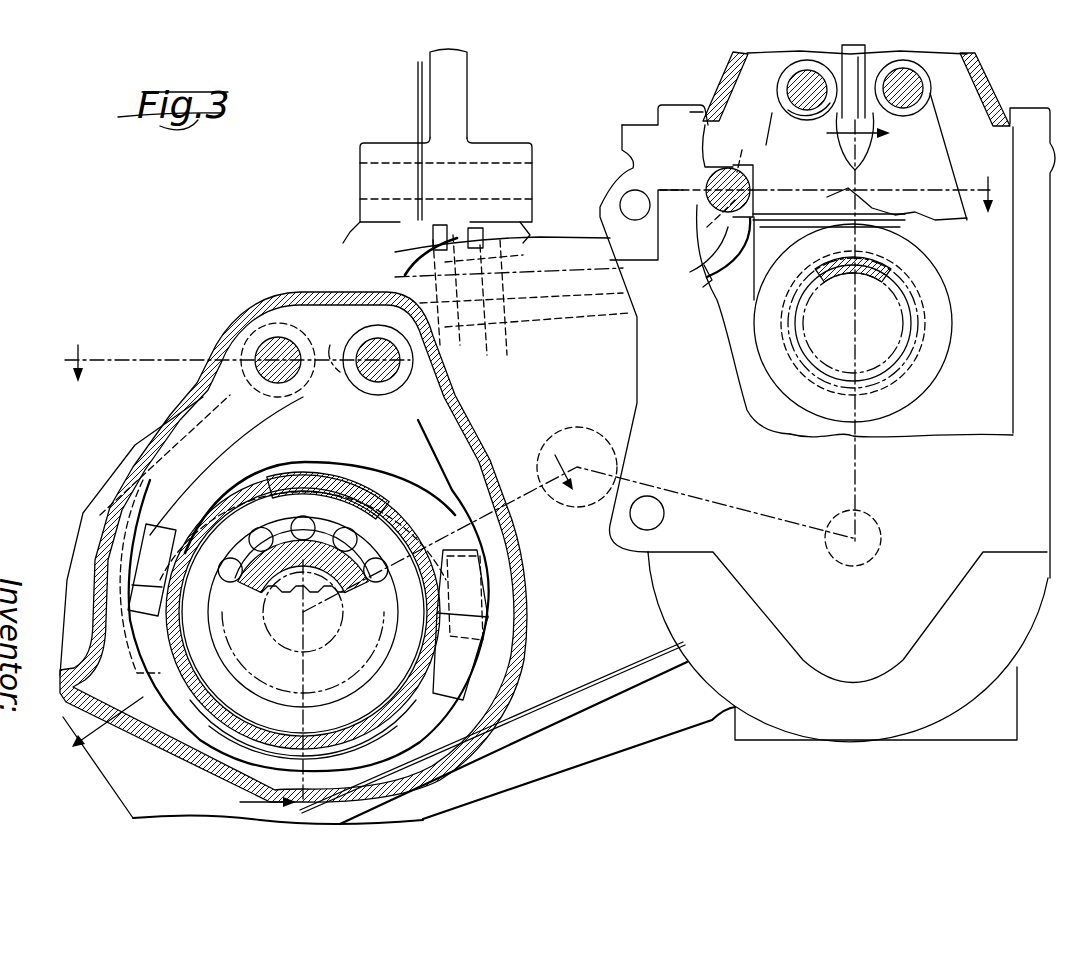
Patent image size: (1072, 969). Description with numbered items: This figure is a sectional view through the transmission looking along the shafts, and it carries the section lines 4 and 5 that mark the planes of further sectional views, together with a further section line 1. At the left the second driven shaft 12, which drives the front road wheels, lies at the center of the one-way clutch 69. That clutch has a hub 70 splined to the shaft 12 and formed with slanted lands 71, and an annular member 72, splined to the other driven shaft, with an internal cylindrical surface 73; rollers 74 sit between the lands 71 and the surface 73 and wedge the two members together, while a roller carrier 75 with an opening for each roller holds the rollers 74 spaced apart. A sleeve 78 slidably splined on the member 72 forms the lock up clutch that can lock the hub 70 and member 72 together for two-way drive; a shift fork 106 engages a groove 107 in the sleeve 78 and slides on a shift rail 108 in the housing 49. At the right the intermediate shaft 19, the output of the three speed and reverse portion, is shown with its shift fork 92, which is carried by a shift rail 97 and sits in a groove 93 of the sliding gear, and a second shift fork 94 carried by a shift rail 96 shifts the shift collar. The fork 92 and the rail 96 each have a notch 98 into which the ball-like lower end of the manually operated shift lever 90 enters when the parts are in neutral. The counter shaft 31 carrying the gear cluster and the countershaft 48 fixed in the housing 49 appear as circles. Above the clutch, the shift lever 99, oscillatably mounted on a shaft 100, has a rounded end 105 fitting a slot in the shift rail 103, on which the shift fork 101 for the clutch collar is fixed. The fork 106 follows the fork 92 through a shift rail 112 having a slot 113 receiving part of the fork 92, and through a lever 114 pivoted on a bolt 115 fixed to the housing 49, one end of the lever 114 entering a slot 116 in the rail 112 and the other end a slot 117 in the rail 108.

The section line 1- 1 is at (555, 468).
The section line 4— 4 is at (450, 591).
The section line 5— 5 is at (530, 279).
The second driven shaft 12 is at (312, 635).
The intermediate shaft 19 is at (832, 362).
The counter shaft 31 is at (876, 527).
The countershaft 48 is at (583, 430).
The transmission housing 49 is at (573, 243).
The one-way clutch 69 is at (272, 514).
The hub 70 is at (362, 568).
The slanted lands 71 is at (335, 570).
The annular member 72 is at (335, 497).
The internal cylindrical surface 73 is at (247, 533).
The rollers 74 is at (345, 525).
The roller carrier 75 is at (258, 520).
The sleeve 78 is at (424, 714).
The shift lever 90 is at (853, 56).
The shift fork 92 is at (952, 268).
The groove 93 is at (912, 362).
The shift fork 94 is at (941, 153).
The shift rail 96 is at (921, 95).
The shift rail 97 is at (782, 100).
The notch 98 is at (790, 86).
The shift lever 99 is at (460, 75).
The shaft 100 is at (503, 165).
The shift fork 101 is at (200, 396).
The shift rail 103 is at (267, 347).
The rounded end 105 is at (300, 343).
The shift fork 106 is at (417, 423).
The groove 107 is at (390, 725).
The shift rail 108 is at (380, 395).
The shift rail 112 is at (708, 183).
The slot 113 is at (735, 149).
The lever 114 is at (706, 290).
The bolt 115 is at (503, 301).
The slot 116 is at (707, 227).
The slot 117 is at (402, 378).